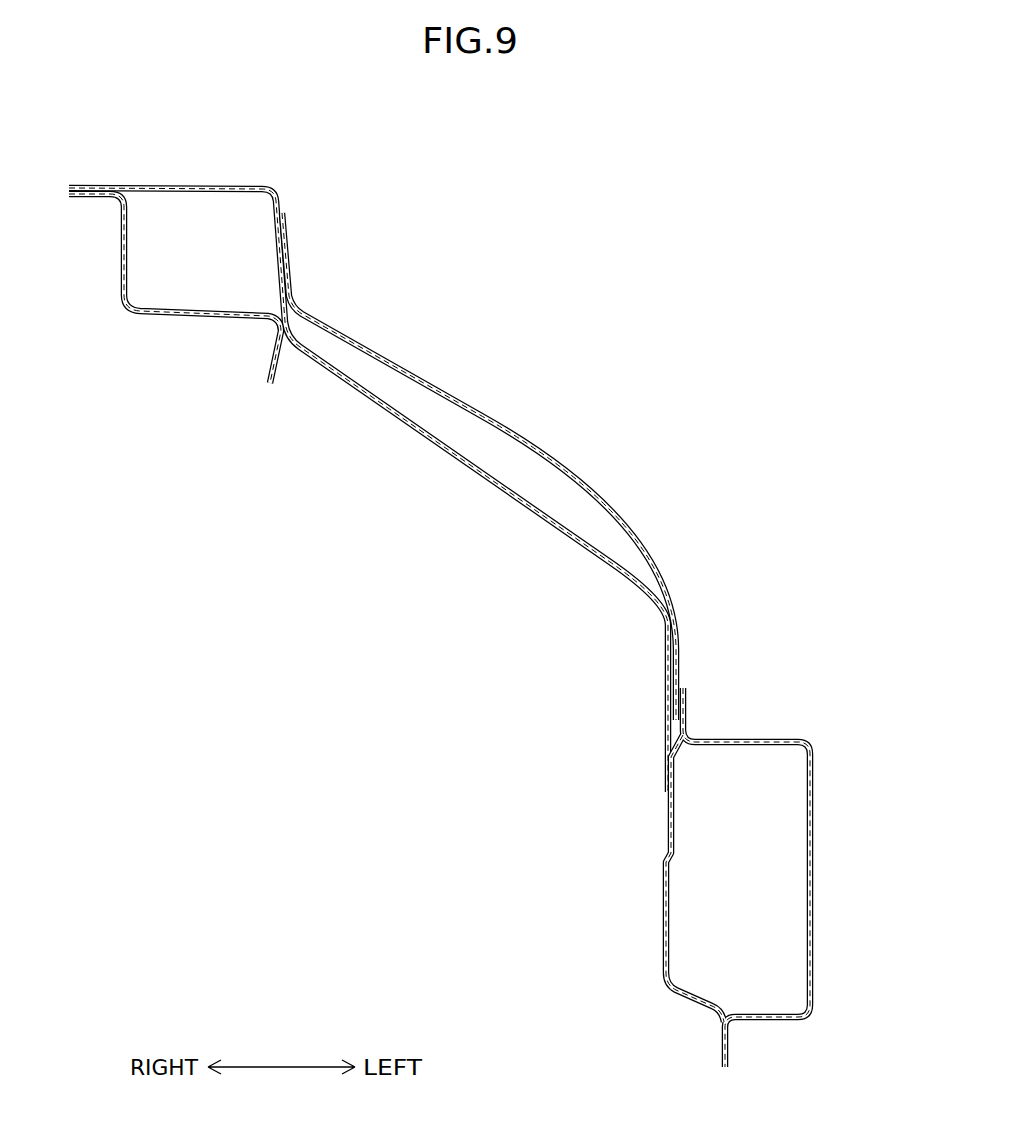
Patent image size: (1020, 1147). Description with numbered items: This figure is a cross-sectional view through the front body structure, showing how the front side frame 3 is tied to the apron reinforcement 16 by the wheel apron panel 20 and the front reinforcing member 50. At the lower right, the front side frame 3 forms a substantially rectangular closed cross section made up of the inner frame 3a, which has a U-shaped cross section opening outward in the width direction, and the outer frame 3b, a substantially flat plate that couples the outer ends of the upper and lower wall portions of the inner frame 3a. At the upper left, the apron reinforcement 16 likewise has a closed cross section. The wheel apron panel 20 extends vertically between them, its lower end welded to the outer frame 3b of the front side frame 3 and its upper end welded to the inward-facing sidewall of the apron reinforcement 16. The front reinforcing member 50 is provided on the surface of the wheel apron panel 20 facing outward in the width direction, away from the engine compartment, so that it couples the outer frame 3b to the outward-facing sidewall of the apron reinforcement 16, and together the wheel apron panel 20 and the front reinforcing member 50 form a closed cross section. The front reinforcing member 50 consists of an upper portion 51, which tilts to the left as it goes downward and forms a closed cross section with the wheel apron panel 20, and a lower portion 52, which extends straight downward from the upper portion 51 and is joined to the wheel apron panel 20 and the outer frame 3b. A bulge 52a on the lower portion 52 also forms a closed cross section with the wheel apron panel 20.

The front side frame 3 is at (817, 726).
The inner frame 3a is at (812, 872).
The outer frame 3b is at (664, 886).
The apron reinforcement 16 is at (128, 330).
The wheel apron panel 20 is at (491, 416).
The front reinforcing member 50 is at (417, 432).
The upper portion 51 is at (500, 493).
The lower portion 52 is at (615, 708).
The bulge 52a is at (665, 676).